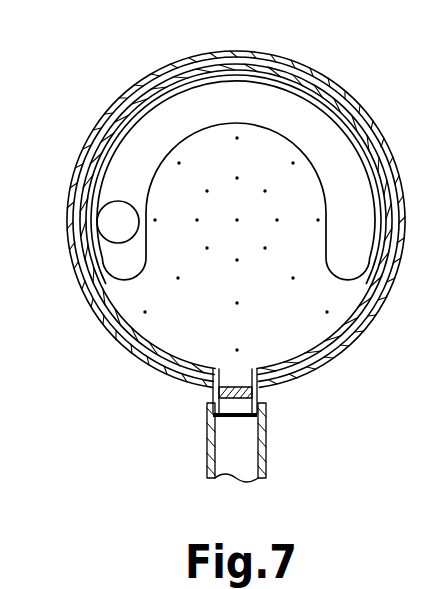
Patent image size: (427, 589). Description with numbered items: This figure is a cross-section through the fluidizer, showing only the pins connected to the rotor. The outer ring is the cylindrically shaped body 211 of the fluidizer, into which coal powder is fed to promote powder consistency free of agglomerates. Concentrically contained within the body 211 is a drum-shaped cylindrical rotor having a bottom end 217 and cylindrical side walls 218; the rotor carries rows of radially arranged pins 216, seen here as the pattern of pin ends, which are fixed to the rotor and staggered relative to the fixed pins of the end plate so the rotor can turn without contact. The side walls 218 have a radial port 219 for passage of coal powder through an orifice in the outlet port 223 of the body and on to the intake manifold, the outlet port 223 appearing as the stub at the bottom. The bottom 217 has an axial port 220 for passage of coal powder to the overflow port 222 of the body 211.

The cylindrically shaped body 211 is at (298, 62).
The pins 216 is at (293, 163).
The bottom end 217 is at (286, 345).
The cylindrical side walls 218 is at (231, 68).
The radial port 219 is at (162, 355).
The axial port 220 is at (148, 128).
The overflow port 222 is at (118, 226).
The outlet port 223 is at (207, 398).